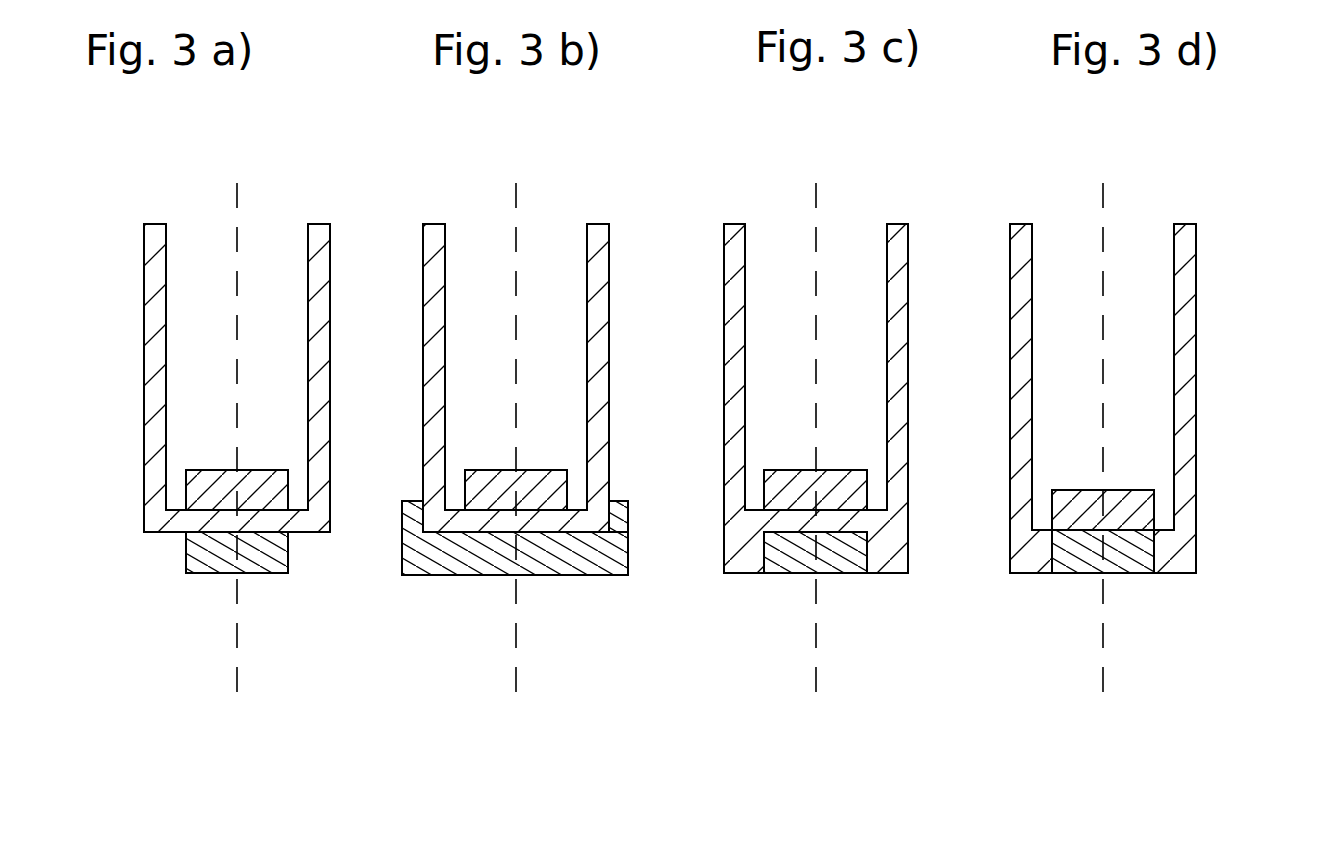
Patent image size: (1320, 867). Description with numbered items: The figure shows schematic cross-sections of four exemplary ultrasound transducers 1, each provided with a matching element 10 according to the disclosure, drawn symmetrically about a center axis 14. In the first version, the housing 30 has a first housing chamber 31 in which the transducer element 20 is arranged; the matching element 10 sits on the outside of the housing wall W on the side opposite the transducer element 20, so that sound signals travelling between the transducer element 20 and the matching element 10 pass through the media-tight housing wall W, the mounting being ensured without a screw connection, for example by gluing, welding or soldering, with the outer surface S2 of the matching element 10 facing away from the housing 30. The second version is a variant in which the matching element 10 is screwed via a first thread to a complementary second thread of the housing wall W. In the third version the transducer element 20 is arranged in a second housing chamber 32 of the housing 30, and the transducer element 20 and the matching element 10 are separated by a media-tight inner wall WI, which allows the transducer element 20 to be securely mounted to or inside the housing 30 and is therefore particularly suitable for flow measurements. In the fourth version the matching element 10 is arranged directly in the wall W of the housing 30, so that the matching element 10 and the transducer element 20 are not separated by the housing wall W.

In FIG. 3a, the sensor arrangement 1 is at (219, 424).
In FIG. 3b, the sensor arrangement 1 is at (516, 448).
In FIG. 3c, the sensor arrangement 1 is at (782, 446).
In FIG. 3d, the sensor arrangement 1 is at (1116, 451).
In FIG. 3a, the matching element 10 is at (215, 553).
In FIG. 3b, the matching element 10 is at (515, 538).
In FIG. 3c, the matching element 10 is at (815, 552).
In FIG. 3d, the matching element 10 is at (1082, 565).
In FIG. 3a, the center axis 14 is at (238, 213).
In FIG. 3b, the center axis 14 is at (517, 213).
In FIG. 3c, the center axis 14 is at (817, 213).
In FIG. 3d, the center axis 14 is at (1103, 232).
In FIG. 3a, the transducer element 20 is at (205, 490).
In FIG. 3b, the transducer element 20 is at (485, 490).
In FIG. 3c, the transducer element 20 is at (790, 497).
In FIG. 3d, the transducer element 20 is at (1070, 512).
In FIG. 3a, the housing 30 is at (318, 242).
In FIG. 3b, the housing 30 is at (598, 242).
In FIG. 3c, the housing 30 is at (898, 245).
In FIG. 3d, the housing 30 is at (1187, 247).
In FIG. 3a, the first housing chamber 31 is at (196, 273).
In FIG. 3b, the first housing chamber 31 is at (490, 271).
In FIG. 3c, the first housing chamber 31 is at (775, 255).
In FIG. 3d, the first housing chamber 31 is at (1133, 315).
In FIG. 3c, the second housing chamber 32 is at (847, 567).
In FIG. 3d, the second housing chamber 32 is at (1135, 573).
In FIG. 3a, the housing wall W is at (152, 532).
In FIG. 3b, the housing wall W is at (446, 533).
In FIG. 3c, the housing wall W is at (750, 573).
In FIG. 3d, the housing wall W is at (1173, 555).
In FIG. 3c, the inner wall WI is at (882, 508).
In FIG. 3a, the second side S2 is at (243, 573).
In FIG. 3b, the second side S2 is at (496, 576).
In FIG. 3c, the second side S2 is at (823, 575).
In FIG. 3d, the second side S2 is at (1112, 573).